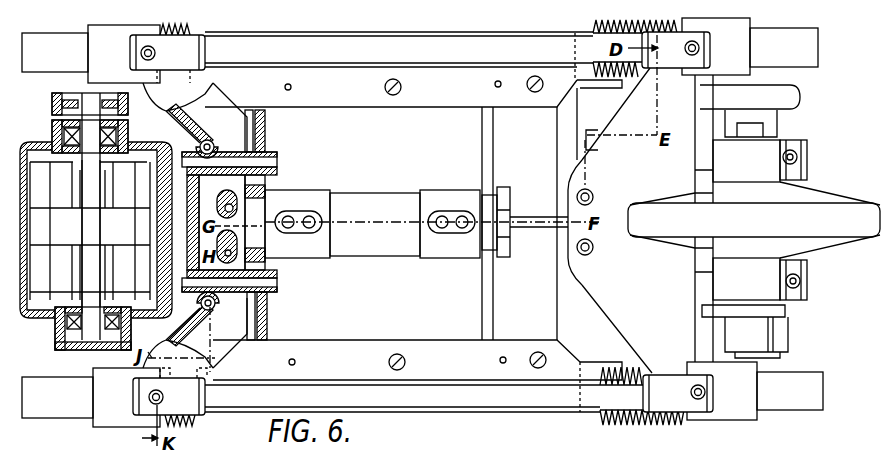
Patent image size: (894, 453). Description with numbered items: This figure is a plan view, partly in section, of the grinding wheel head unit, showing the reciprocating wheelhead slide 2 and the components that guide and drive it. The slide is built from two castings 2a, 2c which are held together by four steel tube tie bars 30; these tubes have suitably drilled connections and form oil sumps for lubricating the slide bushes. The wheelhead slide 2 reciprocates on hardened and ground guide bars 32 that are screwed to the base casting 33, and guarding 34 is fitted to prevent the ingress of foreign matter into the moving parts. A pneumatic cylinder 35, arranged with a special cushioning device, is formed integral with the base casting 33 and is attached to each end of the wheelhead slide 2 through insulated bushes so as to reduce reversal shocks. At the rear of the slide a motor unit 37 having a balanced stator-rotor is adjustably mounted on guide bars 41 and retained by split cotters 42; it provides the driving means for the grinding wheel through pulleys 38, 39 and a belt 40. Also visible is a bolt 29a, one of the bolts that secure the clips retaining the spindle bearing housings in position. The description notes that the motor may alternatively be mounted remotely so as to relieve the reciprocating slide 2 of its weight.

The wheelhead slide 2 is at (334, 107).
The casting 2a is at (182, 338).
The casting 2c is at (672, 218).
The bolt 29a is at (800, 282).
The steel tube tie bar 30 is at (496, 53).
The guide bar 32 is at (392, 206).
The base casting 33 is at (372, 247).
The guarding 34 is at (178, 32).
The pneumatic cylinder 35 is at (432, 224).
The motor unit 37 is at (65, 290).
The pulley 38 is at (54, 107).
The pulley 39 is at (795, 86).
The belt 40 is at (591, 103).
The guide bar 41 is at (277, 166).
The split cotter 42 is at (210, 139).